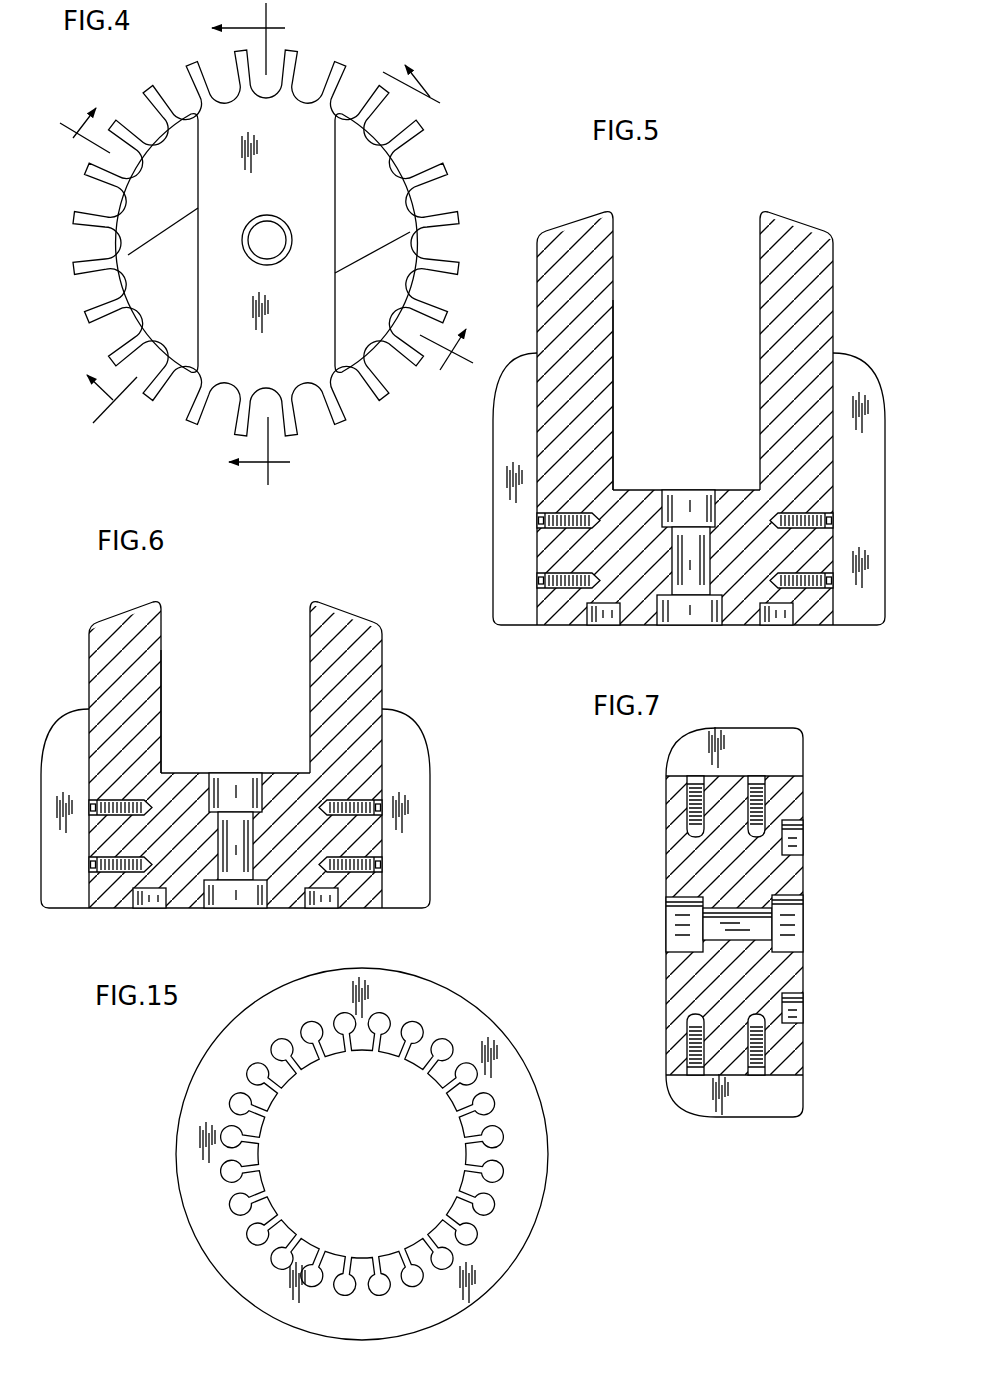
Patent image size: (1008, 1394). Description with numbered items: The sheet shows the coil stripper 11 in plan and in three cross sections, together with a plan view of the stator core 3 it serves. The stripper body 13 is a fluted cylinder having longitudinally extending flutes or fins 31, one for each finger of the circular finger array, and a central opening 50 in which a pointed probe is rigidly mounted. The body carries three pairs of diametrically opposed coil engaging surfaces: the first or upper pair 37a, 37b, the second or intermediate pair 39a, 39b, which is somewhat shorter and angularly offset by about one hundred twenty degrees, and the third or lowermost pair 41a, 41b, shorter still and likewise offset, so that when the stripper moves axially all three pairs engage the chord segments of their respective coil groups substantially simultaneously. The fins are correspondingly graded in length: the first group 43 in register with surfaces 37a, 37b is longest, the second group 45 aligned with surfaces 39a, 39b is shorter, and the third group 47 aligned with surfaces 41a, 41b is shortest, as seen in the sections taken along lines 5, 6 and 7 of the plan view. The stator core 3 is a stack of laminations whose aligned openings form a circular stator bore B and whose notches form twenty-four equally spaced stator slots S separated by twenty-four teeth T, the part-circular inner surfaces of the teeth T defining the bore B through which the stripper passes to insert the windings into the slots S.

In FIG. 15, the stator core 3 is at (505, 1028).
In FIG. 4, the section line 5— 5 is at (261, 250).
In FIG. 4, the section line 6— 6 is at (270, 254).
In FIG. 4, the section line 7— 7 is at (254, 248).
In FIG. 5, the stripper 11 is at (807, 636).
In FIG. 6, the stripper 11 is at (333, 915).
In FIG. 7, the stripper 11 is at (816, 802).
In FIG. 4, the stripper body 13 is at (308, 395).
In FIG. 5, the stripper body 13 is at (822, 552).
In FIG. 6, the stripper body 13 is at (189, 878).
In FIG. 7, the stripper body 13 is at (777, 975).
In FIG. 4, the flutes 31 is at (418, 161).
In FIG. 5, the flutes 31 is at (850, 505).
In FIG. 6, the flutes 31 is at (398, 768).
In FIG. 7, the flutes 31 is at (793, 1077).
In FIG. 4, the upper coil engaging surface 37a is at (152, 214).
In FIG. 5, the upper coil engaging surface 37a is at (582, 217).
In FIG. 4, the upper coil engaging surface 37b is at (358, 318).
In FIG. 5, the upper coil engaging surface 37b is at (793, 222).
In FIG. 4, the intermediate coil engaging surface 39a is at (154, 296).
In FIG. 6, the intermediate coil engaging surface 39a is at (139, 605).
In FIG. 4, the intermediate coil engaging surface 39b is at (386, 207).
In FIG. 6, the intermediate coil engaging surface 39b is at (363, 612).
In FIG. 5, the lowermost coil engaging surface 41a is at (686, 425).
In FIG. 6, the lowermost coil engaging surface 41a is at (235, 721).
In FIG. 7, the lowermost coil engaging surface 41a is at (663, 993).
In FIG. 4, the lowermost coil engaging surface 41b is at (306, 122).
In FIG. 5, the lowermost coil engaging surface 41b is at (653, 490).
In FIG. 6, the lowermost coil engaging surface 41b is at (199, 773).
In FIG. 7, the lowermost coil engaging surface 41b is at (662, 838).
In FIG. 4, the first group of fins 43 is at (112, 124).
In FIG. 5, the first group of fins 43 is at (884, 413).
In FIG. 4, the second group of fins 45 is at (450, 224).
In FIG. 6, the second group of fins 45 is at (432, 825).
In FIG. 7, the third group of fins 47 is at (781, 744).
In FIG. 4, the central opening 50 is at (253, 249).
In FIG. 5, the central opening 50 is at (712, 515).
In FIG. 6, the central opening 50 is at (247, 799).
In FIG. 7, the central opening 50 is at (680, 948).
In FIG. 15, the stator bore B is at (433, 1080).
In FIG. 15, the stator slots S is at (490, 1168).
In FIG. 15, the teeth T is at (455, 1200).